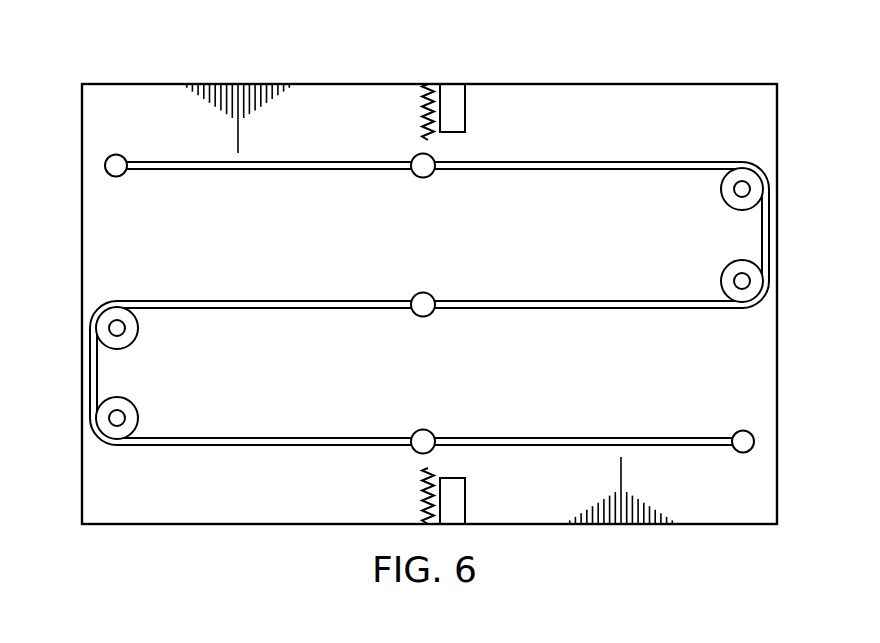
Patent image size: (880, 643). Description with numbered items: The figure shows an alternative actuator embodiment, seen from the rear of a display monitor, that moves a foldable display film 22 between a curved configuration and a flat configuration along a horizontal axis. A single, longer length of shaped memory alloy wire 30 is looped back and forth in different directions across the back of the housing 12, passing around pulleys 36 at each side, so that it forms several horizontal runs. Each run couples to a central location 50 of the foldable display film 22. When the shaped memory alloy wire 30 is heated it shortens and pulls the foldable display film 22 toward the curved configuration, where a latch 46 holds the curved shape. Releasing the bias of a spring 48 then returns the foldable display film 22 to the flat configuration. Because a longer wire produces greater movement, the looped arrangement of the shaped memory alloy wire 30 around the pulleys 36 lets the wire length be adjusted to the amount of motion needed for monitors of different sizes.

The housing 12 is at (80, 305).
The foldable display film 22 is at (224, 252).
The shaped memory alloy wire 30 is at (546, 300).
The pulleys 36 is at (720, 183).
The latch 46 is at (466, 95).
The spring 48 is at (421, 130).
The central location 50 is at (430, 176).